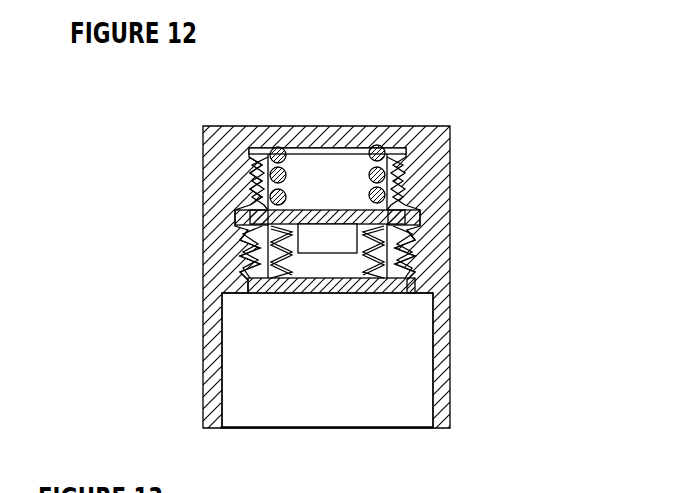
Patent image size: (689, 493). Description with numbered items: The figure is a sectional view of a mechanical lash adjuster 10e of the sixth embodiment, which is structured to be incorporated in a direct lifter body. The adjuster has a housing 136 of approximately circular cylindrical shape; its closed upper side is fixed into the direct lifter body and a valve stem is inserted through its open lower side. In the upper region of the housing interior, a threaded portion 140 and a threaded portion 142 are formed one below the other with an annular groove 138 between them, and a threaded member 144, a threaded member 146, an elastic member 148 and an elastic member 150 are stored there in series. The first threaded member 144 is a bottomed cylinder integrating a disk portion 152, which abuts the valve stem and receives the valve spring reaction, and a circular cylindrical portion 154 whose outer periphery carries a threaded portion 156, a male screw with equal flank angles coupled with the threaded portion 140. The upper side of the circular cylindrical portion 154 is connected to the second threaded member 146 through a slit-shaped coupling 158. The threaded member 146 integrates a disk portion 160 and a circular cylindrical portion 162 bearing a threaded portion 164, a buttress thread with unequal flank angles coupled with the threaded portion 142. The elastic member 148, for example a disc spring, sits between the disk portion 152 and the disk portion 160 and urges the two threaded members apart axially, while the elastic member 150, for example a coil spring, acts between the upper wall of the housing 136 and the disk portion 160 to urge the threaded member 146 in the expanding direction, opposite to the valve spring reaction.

The mechanical lash adjuster 10e is at (480, 248).
The housing 136 is at (453, 296).
The annular groove 138 is at (418, 212).
The threaded portion 140 is at (405, 298).
The threaded portion 142 is at (398, 150).
The threaded member 144 is at (292, 300).
The threaded member 146 is at (250, 186).
The elastic member 148 is at (362, 298).
The elastic member 150 is at (290, 156).
The disk portion 152 is at (267, 297).
The circular cylindrical portion 154 is at (253, 262).
The threaded portion 156 is at (255, 278).
The slit-shaped coupling 158 is at (320, 245).
The disk portion 160 is at (327, 210).
The circular cylindrical portion 162 is at (237, 212).
The threaded portion 164 is at (256, 163).